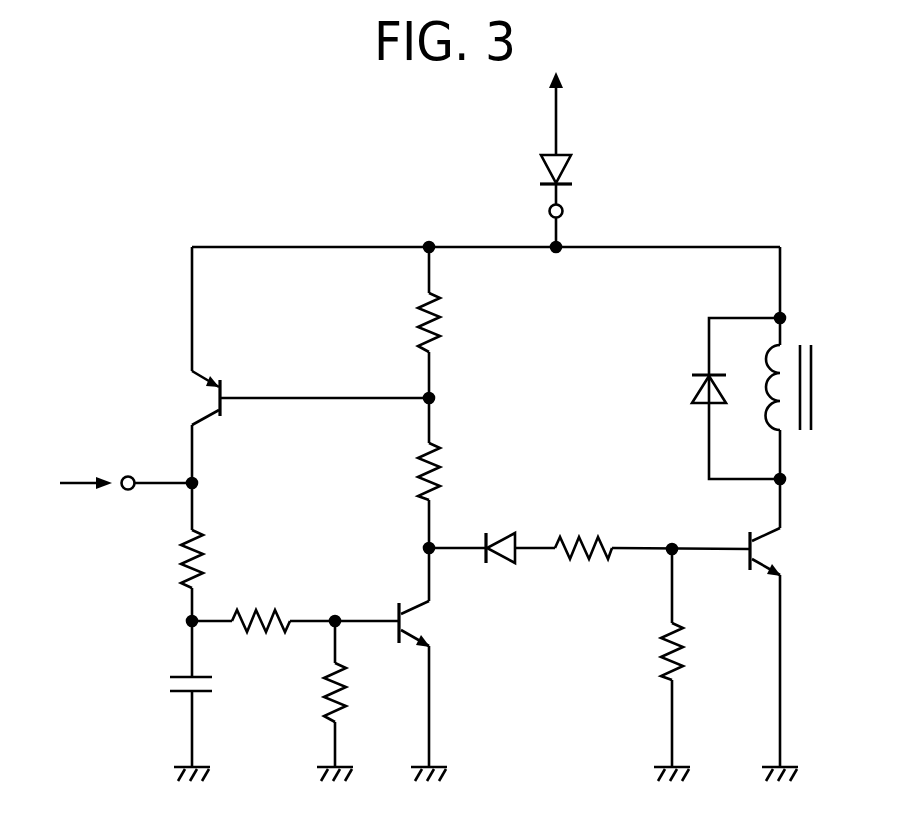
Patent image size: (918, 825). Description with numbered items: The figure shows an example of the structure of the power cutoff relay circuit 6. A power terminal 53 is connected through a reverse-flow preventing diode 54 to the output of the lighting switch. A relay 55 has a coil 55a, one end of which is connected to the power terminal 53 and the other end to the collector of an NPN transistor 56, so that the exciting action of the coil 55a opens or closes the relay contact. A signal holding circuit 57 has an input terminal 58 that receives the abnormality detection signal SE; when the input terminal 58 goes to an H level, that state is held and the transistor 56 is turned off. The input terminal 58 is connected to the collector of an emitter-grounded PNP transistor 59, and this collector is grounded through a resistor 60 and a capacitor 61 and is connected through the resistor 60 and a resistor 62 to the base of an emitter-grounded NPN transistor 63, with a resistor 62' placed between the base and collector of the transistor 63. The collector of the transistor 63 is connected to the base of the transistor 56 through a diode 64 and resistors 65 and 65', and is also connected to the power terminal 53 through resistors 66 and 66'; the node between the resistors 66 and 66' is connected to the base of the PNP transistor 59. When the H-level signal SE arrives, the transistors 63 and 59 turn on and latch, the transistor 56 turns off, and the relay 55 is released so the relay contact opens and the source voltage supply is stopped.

The power cutoff relay circuit 6 is at (409, 172).
The power terminal 53 is at (549, 211).
The reverse-flow preventing diode 54 is at (573, 164).
The relay 55 is at (825, 366).
The coil 55a is at (784, 432).
The NPN transistor 56 is at (763, 548).
The signal holding circuit 57 is at (460, 456).
The input terminal 58 is at (128, 477).
The PNP transistor 59 is at (205, 398).
The resistor 60 is at (205, 541).
The capacitor 61 is at (184, 678).
The resistor 62 is at (282, 595).
The resistor 62' is at (307, 701).
The NPN transistor 63 is at (415, 621).
The diode 64 is at (508, 531).
The resistor 65 is at (592, 514).
The resistor 65' is at (639, 665).
The resistor 66 is at (387, 471).
The resistor 66' is at (393, 319).